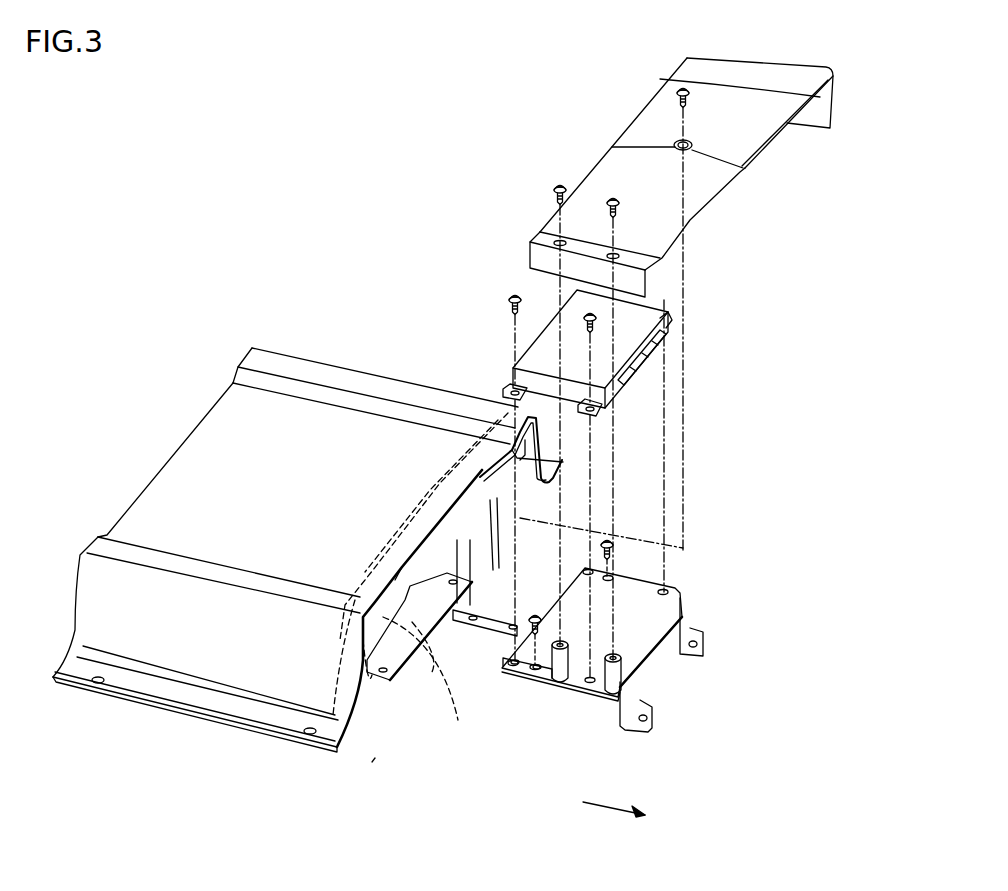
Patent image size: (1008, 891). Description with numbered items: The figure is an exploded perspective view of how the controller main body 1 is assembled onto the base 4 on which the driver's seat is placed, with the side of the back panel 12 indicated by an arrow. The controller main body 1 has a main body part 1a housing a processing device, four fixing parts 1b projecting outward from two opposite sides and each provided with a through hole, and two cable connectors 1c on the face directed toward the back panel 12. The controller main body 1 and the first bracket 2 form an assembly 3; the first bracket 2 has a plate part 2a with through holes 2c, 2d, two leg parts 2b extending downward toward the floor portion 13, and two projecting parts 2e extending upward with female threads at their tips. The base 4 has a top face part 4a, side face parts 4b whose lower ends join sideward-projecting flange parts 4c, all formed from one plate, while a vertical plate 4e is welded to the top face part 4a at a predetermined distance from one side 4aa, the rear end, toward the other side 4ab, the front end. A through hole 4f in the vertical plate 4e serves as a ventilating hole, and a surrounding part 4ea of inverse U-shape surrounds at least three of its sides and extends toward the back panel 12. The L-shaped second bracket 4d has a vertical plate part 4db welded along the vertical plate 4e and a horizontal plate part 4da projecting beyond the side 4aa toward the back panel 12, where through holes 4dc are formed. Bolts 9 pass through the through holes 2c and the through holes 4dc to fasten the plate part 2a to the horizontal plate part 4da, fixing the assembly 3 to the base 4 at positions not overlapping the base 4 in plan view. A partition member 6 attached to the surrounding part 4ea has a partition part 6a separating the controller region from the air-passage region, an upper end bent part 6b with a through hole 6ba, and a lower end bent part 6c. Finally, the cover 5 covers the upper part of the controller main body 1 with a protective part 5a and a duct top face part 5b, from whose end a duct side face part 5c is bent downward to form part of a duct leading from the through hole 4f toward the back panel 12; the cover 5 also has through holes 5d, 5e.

The controller main body 1 is at (607, 480).
The main body part 1a is at (548, 343).
The fixing part 1b is at (505, 392).
The cable connector 1c is at (660, 343).
The first bracket 2 is at (626, 632).
The plate part 2a is at (637, 640).
The leg part 2b is at (704, 638).
The through hole 2c is at (612, 578).
The through hole 2d is at (587, 570).
The projecting part 2e is at (560, 660).
The assembly 3 is at (758, 322).
The base 4 is at (298, 556).
The top face part 4a is at (175, 495).
The one side 4aa is at (402, 567).
The other side 4ab is at (177, 447).
The side face part 4b is at (115, 603).
The flange part 4c is at (217, 702).
The second bracket 4d is at (482, 750).
The horizontal plate part 4da is at (400, 672).
The vertical plate part 4db is at (450, 670).
The through hole 4dc is at (372, 675).
The vertical plate 4e is at (415, 533).
The surrounding part 4ea is at (457, 510).
The through hole 4f is at (495, 540).
The cover 5 is at (656, 359).
The protective part 5a is at (603, 180).
The duct top face part 5b is at (657, 115).
The duct side face part 5c is at (667, 83).
The through hole 5d is at (574, 253).
The through hole 5e is at (674, 143).
The partition member 6 is at (463, 538).
The partition part 6a is at (517, 643).
The upper end bent part 6b is at (488, 592).
The through hole 6ba is at (516, 432).
The lower end bent part 6c is at (453, 598).
The bolt 9 is at (608, 540).
The back panel 12 is at (608, 808).
The floor portion 13 is at (372, 762).